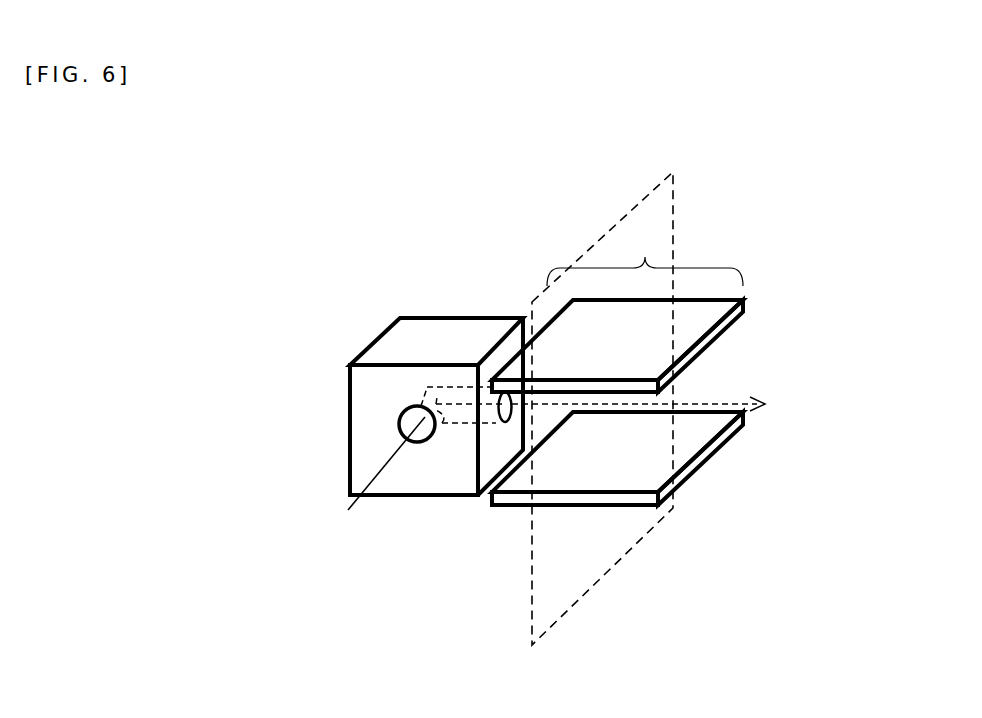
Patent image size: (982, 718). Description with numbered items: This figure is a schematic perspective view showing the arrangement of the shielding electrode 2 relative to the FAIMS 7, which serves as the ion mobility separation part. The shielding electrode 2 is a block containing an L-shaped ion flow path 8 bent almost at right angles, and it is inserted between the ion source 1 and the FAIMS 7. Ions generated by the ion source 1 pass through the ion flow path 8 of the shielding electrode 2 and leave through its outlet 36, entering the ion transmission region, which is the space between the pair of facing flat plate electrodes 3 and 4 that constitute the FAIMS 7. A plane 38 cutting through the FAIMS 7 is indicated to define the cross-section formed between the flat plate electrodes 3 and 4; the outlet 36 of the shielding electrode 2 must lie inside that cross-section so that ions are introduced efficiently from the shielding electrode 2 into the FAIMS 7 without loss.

The ion source 1 is at (354, 503).
The shielding electrode 2 is at (380, 331).
The flat plate electrode 3 is at (617, 346).
The flat plate electrode 4 is at (617, 458).
The FAIMS 7 is at (645, 255).
The ion flow path 8 is at (412, 398).
The outlet 36 is at (505, 422).
The plane 38 is at (672, 176).